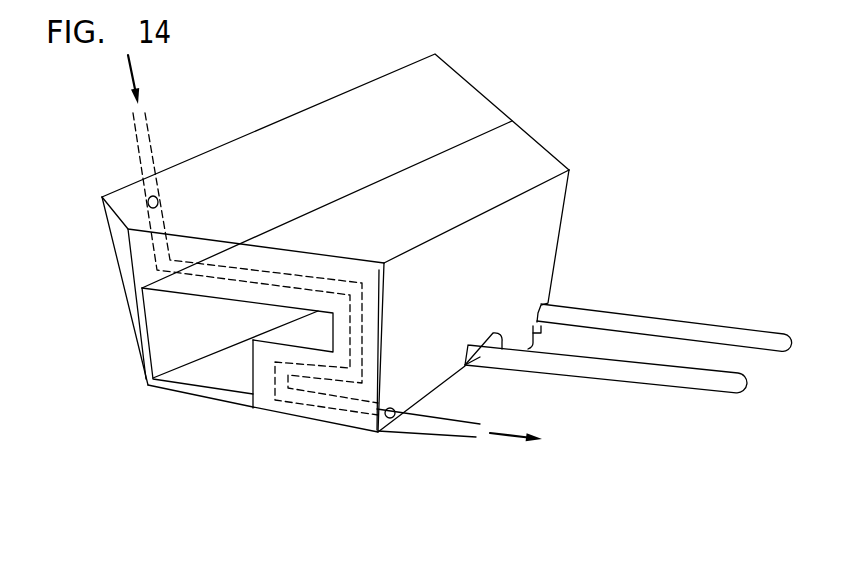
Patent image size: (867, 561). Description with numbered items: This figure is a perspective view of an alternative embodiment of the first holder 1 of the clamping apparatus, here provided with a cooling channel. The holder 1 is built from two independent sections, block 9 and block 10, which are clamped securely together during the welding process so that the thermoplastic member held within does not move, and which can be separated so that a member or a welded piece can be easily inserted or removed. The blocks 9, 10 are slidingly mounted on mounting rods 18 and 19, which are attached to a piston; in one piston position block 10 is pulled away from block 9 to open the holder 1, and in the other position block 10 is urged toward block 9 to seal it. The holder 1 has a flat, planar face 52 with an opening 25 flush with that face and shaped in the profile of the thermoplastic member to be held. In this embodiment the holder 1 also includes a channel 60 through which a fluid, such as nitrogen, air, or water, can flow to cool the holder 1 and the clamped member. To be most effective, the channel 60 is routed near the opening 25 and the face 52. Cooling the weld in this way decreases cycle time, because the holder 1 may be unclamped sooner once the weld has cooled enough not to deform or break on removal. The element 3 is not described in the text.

The first holder 1 is at (600, 85).
The housing 3 is at (187, 387).
The block 9 is at (315, 140).
The block 10 is at (517, 158).
The mounting rod 18 is at (717, 393).
The mounting rod 19 is at (750, 332).
The opening 25 is at (175, 320).
The flat, planar face 52 is at (282, 405).
The channel 60 is at (342, 408).